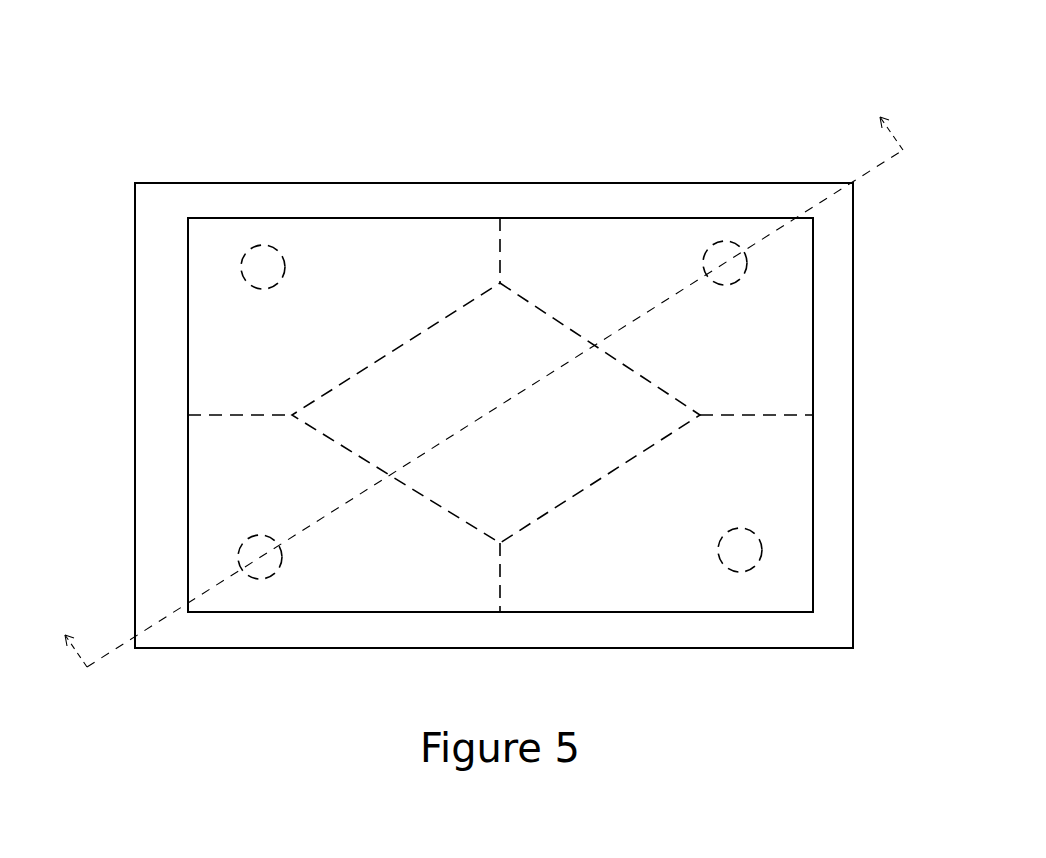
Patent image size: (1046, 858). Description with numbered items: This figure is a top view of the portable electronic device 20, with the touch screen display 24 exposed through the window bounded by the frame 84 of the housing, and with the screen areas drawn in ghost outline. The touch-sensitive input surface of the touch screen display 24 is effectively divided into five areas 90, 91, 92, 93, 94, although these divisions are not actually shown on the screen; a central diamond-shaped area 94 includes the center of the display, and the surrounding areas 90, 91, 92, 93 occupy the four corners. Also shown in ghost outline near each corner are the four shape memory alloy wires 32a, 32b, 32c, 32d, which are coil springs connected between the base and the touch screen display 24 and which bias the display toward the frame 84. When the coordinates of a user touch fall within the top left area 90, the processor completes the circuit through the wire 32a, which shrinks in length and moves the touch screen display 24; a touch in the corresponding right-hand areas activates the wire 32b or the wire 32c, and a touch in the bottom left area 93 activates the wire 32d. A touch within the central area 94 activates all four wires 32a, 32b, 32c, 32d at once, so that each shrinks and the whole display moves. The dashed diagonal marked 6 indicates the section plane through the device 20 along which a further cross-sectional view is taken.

The portable electronic device 20 is at (794, 90).
The frame 84 is at (843, 380).
The touch screen display 24 is at (618, 602).
The wire 32a is at (255, 248).
The wire 32b is at (718, 253).
The wire 32c is at (752, 560).
The wire 32d is at (265, 568).
The area 90 is at (273, 357).
The area 91 is at (772, 377).
The area 92 is at (778, 489).
The area 93 is at (270, 489).
The area 94 is at (578, 452).
The section line 6 is at (475, 374).